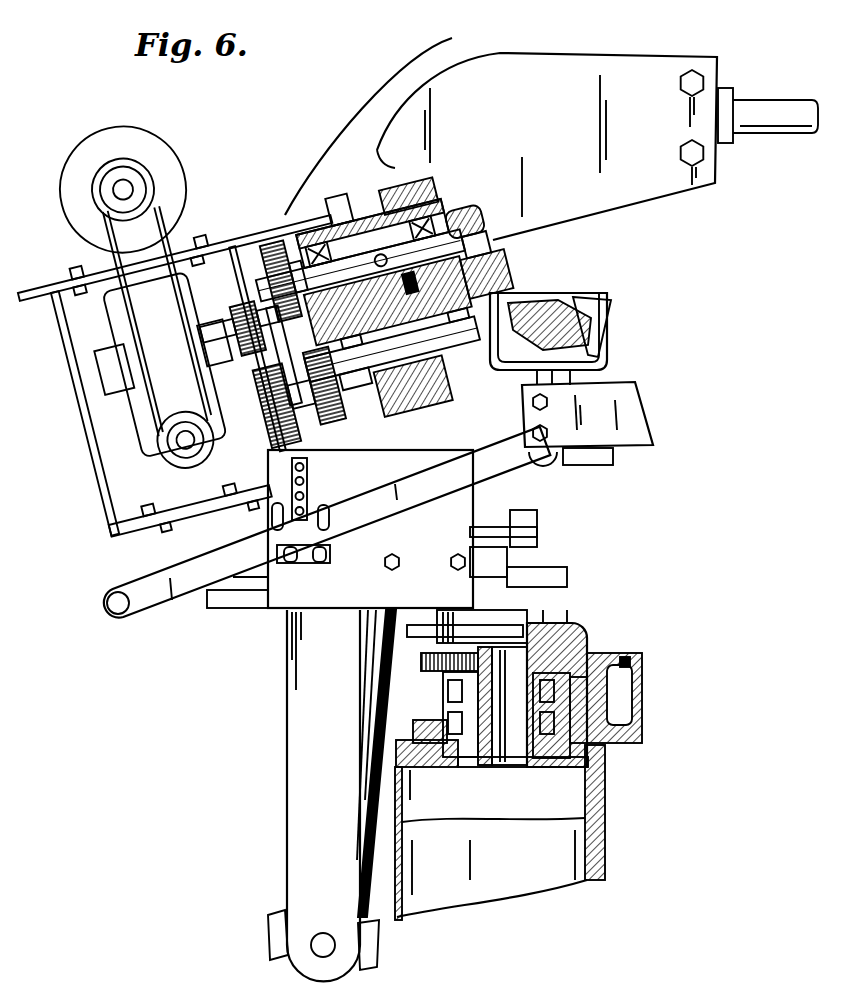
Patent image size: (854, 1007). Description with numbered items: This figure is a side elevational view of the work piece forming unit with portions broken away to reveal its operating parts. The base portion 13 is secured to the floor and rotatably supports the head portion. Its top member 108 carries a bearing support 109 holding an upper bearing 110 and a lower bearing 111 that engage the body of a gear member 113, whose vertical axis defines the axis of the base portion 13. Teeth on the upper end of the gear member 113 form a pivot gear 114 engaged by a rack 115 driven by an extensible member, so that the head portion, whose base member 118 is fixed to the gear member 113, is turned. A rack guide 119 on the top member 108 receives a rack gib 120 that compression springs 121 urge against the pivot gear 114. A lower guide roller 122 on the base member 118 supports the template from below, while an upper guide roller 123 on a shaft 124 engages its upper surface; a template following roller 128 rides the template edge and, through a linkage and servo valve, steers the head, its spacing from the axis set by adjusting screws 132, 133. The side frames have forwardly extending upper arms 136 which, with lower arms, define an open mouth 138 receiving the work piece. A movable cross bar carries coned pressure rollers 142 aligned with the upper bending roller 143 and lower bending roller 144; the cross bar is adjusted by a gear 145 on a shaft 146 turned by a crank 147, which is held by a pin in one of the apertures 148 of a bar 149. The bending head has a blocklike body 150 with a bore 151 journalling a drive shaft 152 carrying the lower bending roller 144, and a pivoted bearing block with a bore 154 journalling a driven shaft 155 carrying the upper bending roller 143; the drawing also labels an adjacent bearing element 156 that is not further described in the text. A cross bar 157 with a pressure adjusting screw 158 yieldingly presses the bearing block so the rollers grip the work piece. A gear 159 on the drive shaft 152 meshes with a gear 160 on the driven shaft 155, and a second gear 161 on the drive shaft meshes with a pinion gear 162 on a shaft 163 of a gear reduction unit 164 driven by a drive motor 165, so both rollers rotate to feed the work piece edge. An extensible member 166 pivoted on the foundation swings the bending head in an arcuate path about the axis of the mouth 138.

The base portion 13 is at (660, 575).
The top member 108 is at (605, 785).
The bearing support 109 is at (430, 720).
The upper bearing 110 is at (443, 695).
The lower bearing 111 is at (396, 758).
The gear member 113 is at (600, 620).
The pivot gear 114 is at (420, 662).
The rack 115 is at (625, 728).
The base member 118 is at (592, 606).
The rack guide 119 is at (605, 750).
The rack gib 120 is at (632, 705).
The compression springs 121 is at (640, 688).
The lower guide roller 122 is at (545, 570).
The upper guide roller 123 is at (525, 515).
The shaft 124 is at (478, 525).
The roller 128 is at (517, 560).
The adjusting screw 132 is at (385, 567).
The adjusting screw 133 is at (460, 555).
The upper arm 136 is at (575, 65).
The open mouth 138 is at (600, 300).
The pressure rollers 142 is at (607, 300).
The upper bending roller 143 is at (505, 262).
The lower bending roller 144 is at (520, 290).
The gear 145 is at (558, 465).
The shaft 146 is at (612, 462).
The crank 147 is at (405, 465).
The apertures 148 is at (330, 474).
The bar 149 is at (310, 492).
The body 150 is at (397, 377).
The bore 151 is at (390, 357).
The drive shaft 152 is at (450, 375).
The bore 154 is at (360, 225).
The driven shaft 155 is at (462, 218).
The bearing 156 is at (478, 228).
The cross bar 157 is at (363, 215).
The pressure adjusting screw 158 is at (389, 119).
The gear 159 is at (305, 458).
The gear 160 is at (280, 245).
The second gear 161 is at (233, 450).
The pinion gear 162 is at (243, 300).
The shaft 163 is at (230, 300).
The gear reduction unit 164 is at (120, 430).
The drive motor 165 is at (90, 132).
The extensible member 166 is at (370, 905).